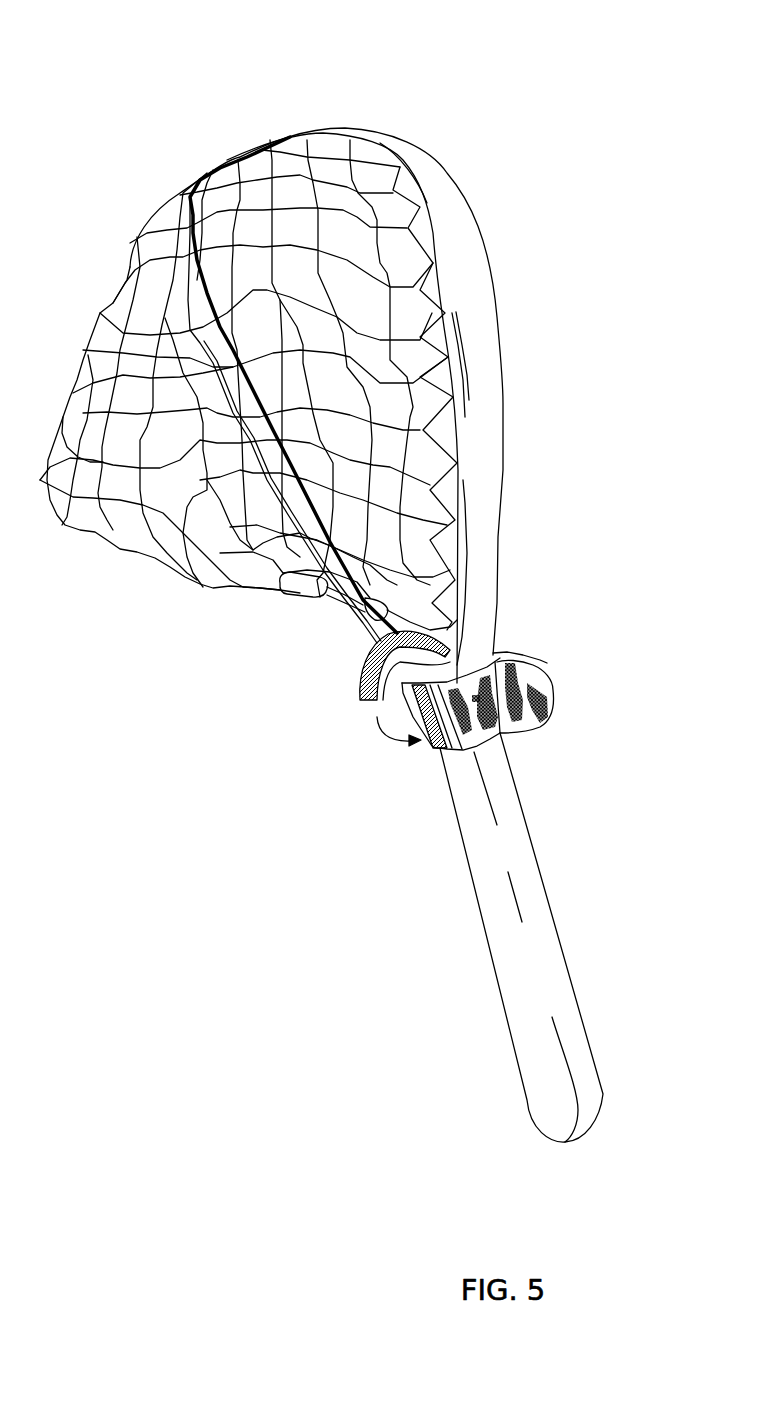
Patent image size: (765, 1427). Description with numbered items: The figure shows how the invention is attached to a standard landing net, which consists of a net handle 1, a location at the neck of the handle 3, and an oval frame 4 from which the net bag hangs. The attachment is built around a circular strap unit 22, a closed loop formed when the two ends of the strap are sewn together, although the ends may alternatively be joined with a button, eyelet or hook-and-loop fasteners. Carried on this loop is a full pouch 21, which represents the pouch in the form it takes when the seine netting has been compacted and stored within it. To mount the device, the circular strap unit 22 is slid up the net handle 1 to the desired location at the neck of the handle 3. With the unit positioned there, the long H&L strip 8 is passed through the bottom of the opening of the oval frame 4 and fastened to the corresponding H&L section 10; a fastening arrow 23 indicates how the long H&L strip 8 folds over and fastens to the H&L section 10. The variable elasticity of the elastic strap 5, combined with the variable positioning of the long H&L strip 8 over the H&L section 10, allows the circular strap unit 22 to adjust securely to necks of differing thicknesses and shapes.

The net handle 1 is at (583, 995).
The neck of the handle 3 is at (493, 657).
The oval frame 4 is at (303, 123).
The elastic strap 5 is at (472, 747).
The long H&L strip 8 is at (357, 690).
The H&L section 10 is at (432, 745).
The full pouch 21 is at (557, 697).
The circular strap unit 22 is at (482, 720).
The fastening arrow 23 is at (377, 733).